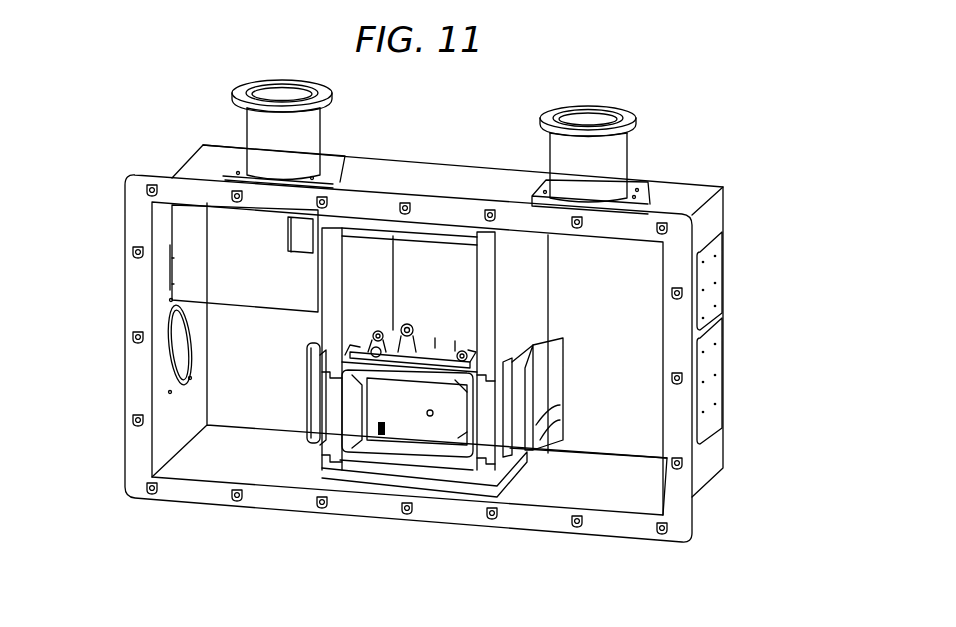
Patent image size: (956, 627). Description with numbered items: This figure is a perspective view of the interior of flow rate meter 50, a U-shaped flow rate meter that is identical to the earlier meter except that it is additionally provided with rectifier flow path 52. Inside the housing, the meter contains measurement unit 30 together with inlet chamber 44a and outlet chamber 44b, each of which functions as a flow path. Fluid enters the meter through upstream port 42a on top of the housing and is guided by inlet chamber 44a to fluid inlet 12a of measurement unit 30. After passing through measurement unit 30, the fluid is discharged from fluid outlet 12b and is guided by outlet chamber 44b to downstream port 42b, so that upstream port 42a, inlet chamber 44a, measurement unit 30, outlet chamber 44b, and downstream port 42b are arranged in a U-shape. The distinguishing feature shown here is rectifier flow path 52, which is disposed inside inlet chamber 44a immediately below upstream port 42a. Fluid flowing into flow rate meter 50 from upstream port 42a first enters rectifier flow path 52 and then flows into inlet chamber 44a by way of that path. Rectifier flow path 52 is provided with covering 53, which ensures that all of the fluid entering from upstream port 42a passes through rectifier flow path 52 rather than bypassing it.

The flow rate meter 50 is at (728, 147).
The upstream port 42a is at (284, 80).
The downstream port 42b is at (594, 103).
The covering 53 is at (208, 225).
The rectifier flow path 52 is at (152, 276).
The inlet chamber 44a is at (235, 388).
The outlet chamber 44b is at (614, 430).
The fluid inlet 12a is at (295, 414).
The fluid outlet 12b is at (568, 378).
The measurement unit 30 is at (437, 476).